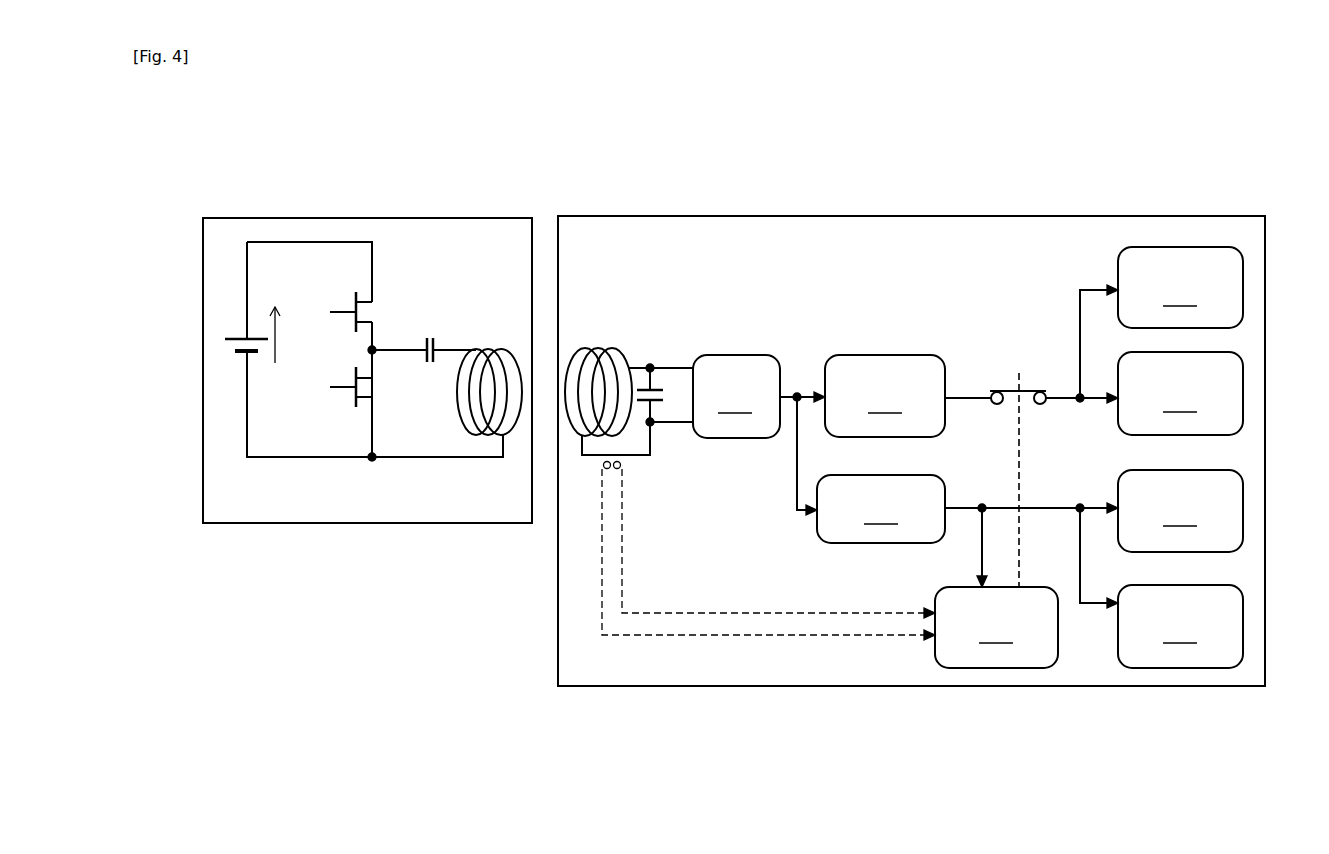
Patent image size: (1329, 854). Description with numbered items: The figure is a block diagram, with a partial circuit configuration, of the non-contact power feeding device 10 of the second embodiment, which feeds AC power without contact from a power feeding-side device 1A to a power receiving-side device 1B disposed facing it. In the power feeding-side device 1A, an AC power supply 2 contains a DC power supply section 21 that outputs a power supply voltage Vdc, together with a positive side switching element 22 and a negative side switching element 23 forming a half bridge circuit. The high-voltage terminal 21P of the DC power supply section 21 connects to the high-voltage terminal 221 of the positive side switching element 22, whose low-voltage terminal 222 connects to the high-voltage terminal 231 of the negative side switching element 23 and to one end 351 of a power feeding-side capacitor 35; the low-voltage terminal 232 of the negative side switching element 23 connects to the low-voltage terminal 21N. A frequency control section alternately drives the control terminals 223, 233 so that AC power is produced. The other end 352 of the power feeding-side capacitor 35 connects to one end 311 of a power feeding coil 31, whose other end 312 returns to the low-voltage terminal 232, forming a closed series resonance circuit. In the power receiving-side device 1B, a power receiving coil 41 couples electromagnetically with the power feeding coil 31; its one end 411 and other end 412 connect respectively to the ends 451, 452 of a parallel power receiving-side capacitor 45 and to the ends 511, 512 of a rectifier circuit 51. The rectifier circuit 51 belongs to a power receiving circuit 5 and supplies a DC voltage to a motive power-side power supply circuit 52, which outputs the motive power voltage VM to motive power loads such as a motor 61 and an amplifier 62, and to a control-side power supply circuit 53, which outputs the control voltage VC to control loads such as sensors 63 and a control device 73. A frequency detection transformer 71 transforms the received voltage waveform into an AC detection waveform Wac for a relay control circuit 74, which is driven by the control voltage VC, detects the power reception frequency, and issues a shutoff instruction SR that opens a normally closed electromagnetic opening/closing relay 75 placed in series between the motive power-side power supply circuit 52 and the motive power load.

The power feeding-side device 1A is at (215, 228).
The power receiving-side device 1B is at (1225, 225).
The non-contact power feeding device 10 is at (545, 198).
The AC power supply 2 is at (323, 364).
The DC power supply section 21 is at (205, 339).
The high-voltage terminal 21P is at (247, 293).
The low-voltage terminal 21N is at (247, 375).
The positive side switching element 22 is at (361, 235).
The high-voltage terminal 221 is at (375, 268).
The low-voltage terminal 222 is at (403, 348).
The control terminal 223 is at (340, 308).
The negative side switching element 23 is at (362, 486).
The high-voltage terminal 231 is at (373, 367).
The low-voltage terminal 232 is at (373, 422).
The control terminal 233 is at (338, 390).
The power feeding-side capacitor 35 is at (437, 244).
The one end of power feeding-side capacitor 351 is at (420, 348).
The other end of power feeding-side capacitor 352 is at (447, 347).
The power feeding coil 31 is at (494, 371).
The one end of power feeding coil 311 is at (460, 347).
The other end of power feeding coil 312 is at (503, 440).
The power receiving coil 41 is at (600, 436).
The one end of power receiving coil 411 is at (667, 258).
The other end of power receiving coil 412 is at (582, 458).
The power receiving-side capacitor 45 is at (680, 472).
The one end of power receiving-side capacitor 451 is at (652, 364).
The other end of power receiving-side capacitor 452 is at (650, 427).
The power receiving circuit 5 is at (797, 452).
The rectifier circuit 51 is at (724, 468).
The one end of rectifier circuit 511 is at (692, 366).
The other end of rectifier circuit 512 is at (683, 425).
The motive power-side power supply circuit 52 is at (885, 396).
The control-side power supply circuit 53 is at (881, 509).
The motor 61 is at (1180, 287).
The amplifier 62 is at (1180, 393).
The sensors 63 is at (1180, 511).
The frequency detection transformer 71 is at (598, 470).
The control device 73 is at (1180, 626).
The relay control circuit 74 is at (996, 627).
The electromagnetic opening/closing relay 75 is at (1030, 380).
The control voltage VC is at (963, 396).
The motive power voltage VM is at (980, 391).
The shutoff instruction SR is at (1019, 463).
The AC detection waveform Wac is at (868, 637).
The power supply voltage Vdc is at (302, 335).